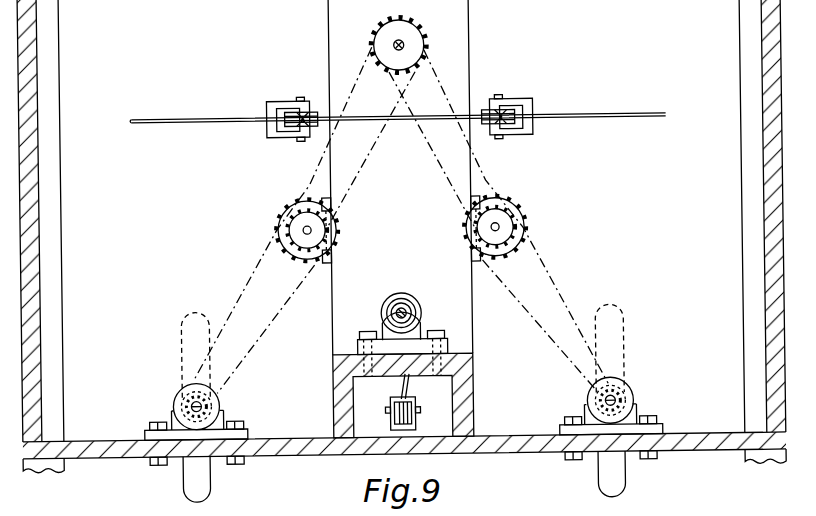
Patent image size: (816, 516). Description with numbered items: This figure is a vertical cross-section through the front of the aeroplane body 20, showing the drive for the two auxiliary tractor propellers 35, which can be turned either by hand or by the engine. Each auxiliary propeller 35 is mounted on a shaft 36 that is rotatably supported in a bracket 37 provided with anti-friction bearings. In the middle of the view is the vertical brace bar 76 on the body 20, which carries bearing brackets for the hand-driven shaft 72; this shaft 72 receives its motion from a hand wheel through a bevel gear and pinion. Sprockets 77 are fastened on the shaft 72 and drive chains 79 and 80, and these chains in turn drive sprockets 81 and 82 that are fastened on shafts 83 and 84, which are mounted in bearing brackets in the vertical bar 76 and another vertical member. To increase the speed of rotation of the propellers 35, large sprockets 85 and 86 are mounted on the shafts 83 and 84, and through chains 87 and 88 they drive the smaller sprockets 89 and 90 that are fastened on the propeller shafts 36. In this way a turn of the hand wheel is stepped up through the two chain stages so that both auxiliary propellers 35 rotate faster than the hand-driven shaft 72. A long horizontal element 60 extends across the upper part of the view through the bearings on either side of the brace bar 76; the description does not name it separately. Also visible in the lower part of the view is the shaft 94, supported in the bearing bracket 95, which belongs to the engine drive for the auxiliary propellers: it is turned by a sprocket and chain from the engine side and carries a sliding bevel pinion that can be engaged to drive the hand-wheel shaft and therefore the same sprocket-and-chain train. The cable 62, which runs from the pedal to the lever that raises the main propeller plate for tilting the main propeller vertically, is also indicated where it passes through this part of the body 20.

The body 20 is at (741, 212).
The auxiliary tractor propeller 35 is at (207, 483).
The propeller shaft 36 is at (206, 404).
The bracket 37 is at (169, 408).
The threaded shaft 60 is at (606, 120).
The cable 62 is at (410, 386).
The shaft 72 is at (404, 45).
The vertical brace bar 76 is at (473, 64).
The sprocket 77 is at (386, 38).
The chain 79 is at (358, 176).
The chain 80 is at (440, 178).
The sprocket 81 is at (321, 226).
The sprocket 82 is at (479, 224).
The shaft 83 is at (318, 233).
The shaft 84 is at (490, 229).
The large sprocket 85 is at (296, 204).
The large sprocket 86 is at (512, 207).
The chain 87 is at (253, 256).
The chain 88 is at (548, 250).
The small sprocket 89 is at (187, 398).
The small sprocket 90 is at (618, 401).
The shaft 94 is at (406, 309).
The bearing bracket 95 is at (421, 314).